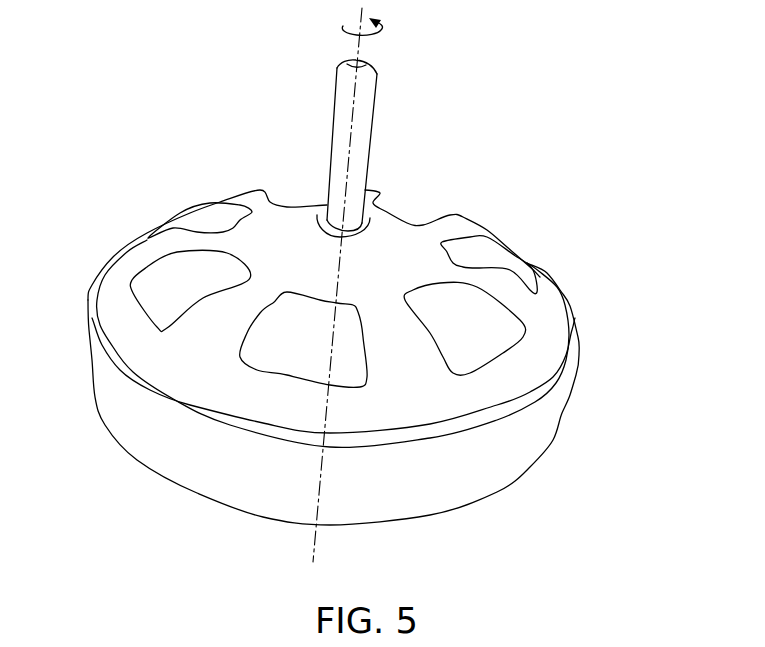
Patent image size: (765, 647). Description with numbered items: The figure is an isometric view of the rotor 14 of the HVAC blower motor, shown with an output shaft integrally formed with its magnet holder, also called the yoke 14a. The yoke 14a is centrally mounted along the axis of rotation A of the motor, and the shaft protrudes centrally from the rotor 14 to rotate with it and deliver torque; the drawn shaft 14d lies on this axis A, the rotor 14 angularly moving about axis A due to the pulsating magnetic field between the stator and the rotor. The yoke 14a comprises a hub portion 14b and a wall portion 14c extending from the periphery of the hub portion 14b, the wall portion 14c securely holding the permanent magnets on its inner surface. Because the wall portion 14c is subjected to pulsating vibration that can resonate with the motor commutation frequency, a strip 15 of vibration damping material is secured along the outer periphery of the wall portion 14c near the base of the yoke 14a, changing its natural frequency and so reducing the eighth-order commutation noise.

The rotor 14 is at (510, 189).
The yoke 14a is at (247, 191).
The hub portion 14b is at (180, 357).
The wall portion 14c is at (457, 430).
The shaft 14d is at (357, 97).
The strip of vibration damping material 15 is at (547, 420).
The axis of rotation A is at (358, 54).